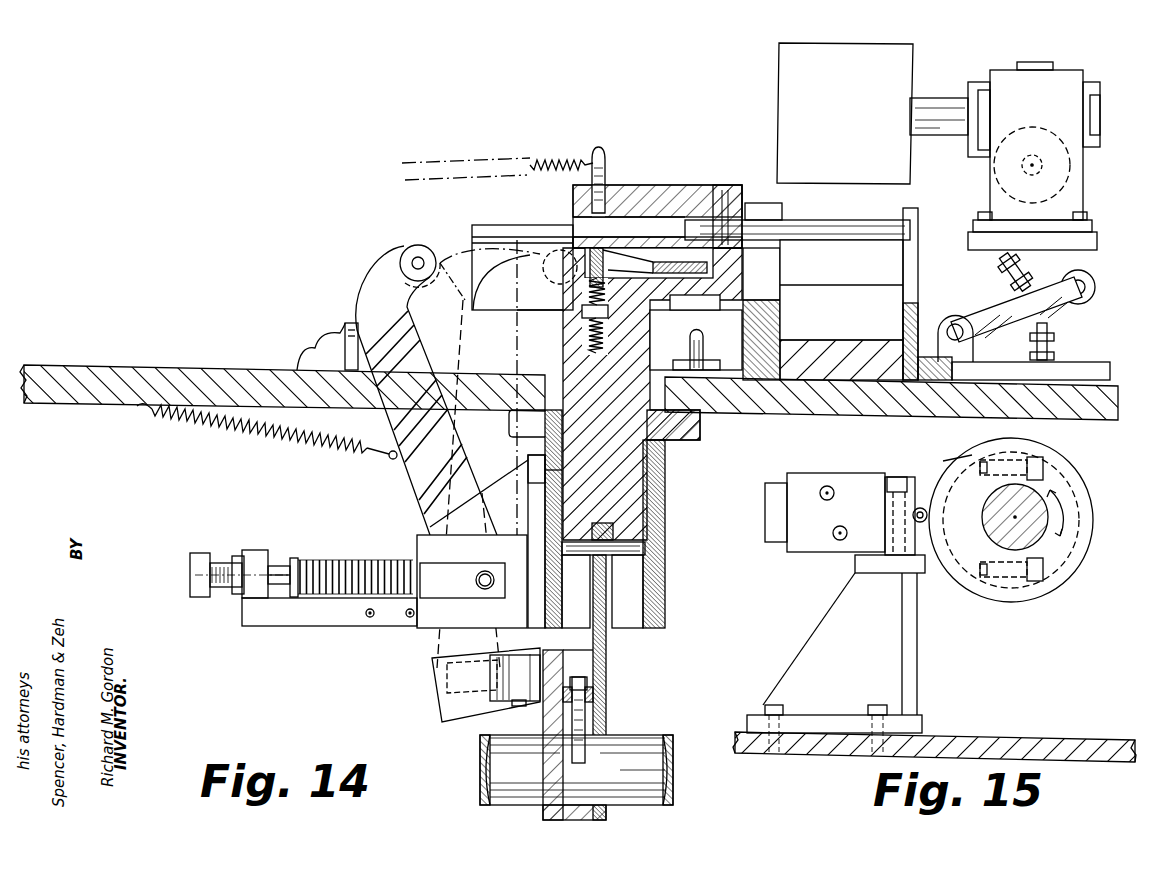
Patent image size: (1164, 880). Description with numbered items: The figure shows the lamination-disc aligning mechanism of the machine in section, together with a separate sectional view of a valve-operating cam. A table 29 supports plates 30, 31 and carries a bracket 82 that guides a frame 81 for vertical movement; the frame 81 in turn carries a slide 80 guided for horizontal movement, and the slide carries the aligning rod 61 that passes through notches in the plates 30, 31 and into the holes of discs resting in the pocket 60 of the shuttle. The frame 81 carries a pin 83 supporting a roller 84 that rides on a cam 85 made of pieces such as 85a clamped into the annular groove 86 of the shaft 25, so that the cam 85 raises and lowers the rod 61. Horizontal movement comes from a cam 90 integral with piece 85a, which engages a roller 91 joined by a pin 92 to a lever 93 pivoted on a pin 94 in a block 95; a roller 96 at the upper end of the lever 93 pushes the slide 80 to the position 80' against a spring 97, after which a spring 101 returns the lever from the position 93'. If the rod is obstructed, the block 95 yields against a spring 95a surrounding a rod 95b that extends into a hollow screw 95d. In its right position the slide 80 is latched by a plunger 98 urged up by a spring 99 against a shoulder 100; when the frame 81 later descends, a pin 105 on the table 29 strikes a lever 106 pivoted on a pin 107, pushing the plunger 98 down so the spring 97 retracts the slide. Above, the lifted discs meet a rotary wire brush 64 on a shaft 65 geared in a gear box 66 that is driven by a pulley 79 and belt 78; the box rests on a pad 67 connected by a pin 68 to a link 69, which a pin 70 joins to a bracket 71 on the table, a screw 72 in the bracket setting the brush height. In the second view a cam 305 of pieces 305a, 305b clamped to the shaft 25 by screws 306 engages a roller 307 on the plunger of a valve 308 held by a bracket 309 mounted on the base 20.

In FIG. 15, the base 20 is at (857, 745).
In FIG. 14, the shaft 25 is at (655, 769).
In FIG. 15, the shaft 25 is at (995, 503).
In FIG. 14, the table 29 is at (1095, 405).
In FIG. 14, the plate 30 is at (775, 215).
In FIG. 14, the plate 31 is at (920, 213).
In FIG. 14, the pocket 60 is at (875, 325).
In FIG. 14, the aligning rod 61 is at (870, 211).
In FIG. 14, the rotary wire brush 64 is at (898, 60).
In FIG. 14, the shaft 65 is at (950, 136).
In FIG. 14, the gear box 66 is at (1073, 95).
In FIG. 14, the pad 67 is at (1097, 243).
In FIG. 14, the pin 68 is at (1086, 287).
In FIG. 14, the link 69 is at (1068, 307).
In FIG. 14, the pin 70 is at (950, 326).
In FIG. 14, the bracket 71 is at (1100, 375).
In FIG. 14, the screw 72 is at (1058, 333).
In FIG. 14, the belt 78 is at (1003, 266).
In FIG. 14, the pulley 79 is at (1060, 193).
In FIG. 14, the slide 80 is at (607, 236).
In FIG. 14, the slide position 80' is at (540, 332).
In FIG. 14, the frame 81 is at (633, 484).
In FIG. 14, the bracket 82 is at (700, 436).
In FIG. 14, the pin 83 is at (633, 557).
In FIG. 14, the roller 84 is at (595, 565).
In FIG. 14, the cam 85 is at (617, 623).
In FIG. 14, the cam piece 85a is at (557, 720).
In FIG. 14, the annular groove 86 is at (593, 768).
In FIG. 14, the cam 90 is at (507, 717).
In FIG. 14, the roller 91 is at (440, 656).
In FIG. 14, the pin 92 is at (480, 702).
In FIG. 14, the lever 93 is at (426, 390).
In FIG. 14, the lever position 93' is at (453, 298).
In FIG. 14, the pin 94 is at (485, 590).
In FIG. 14, the block 95 is at (440, 578).
In FIG. 14, the spring 95a is at (316, 578).
In FIG. 14, the rod 95b is at (314, 602).
In FIG. 14, the hollow screw 95d is at (245, 534).
In FIG. 14, the roller 96 is at (418, 245).
In FIG. 14, the spring 97 is at (507, 160).
In FIG. 14, the plunger 98 is at (587, 240).
In FIG. 14, the spring 99 is at (508, 400).
In FIG. 14, the shoulder 100 is at (612, 208).
In FIG. 14, the spring 101 is at (273, 445).
In FIG. 14, the pin 105 is at (700, 343).
In FIG. 14, the lever 106 is at (710, 255).
In FIG. 14, the pin 107 is at (655, 311).
In FIG. 15, the cam 305 is at (977, 585).
In FIG. 15, the cam piece 305a is at (1020, 442).
In FIG. 15, the cam piece 305b is at (1083, 486).
In FIG. 15, the screws 306 is at (1043, 568).
In FIG. 15, the roller 307 is at (925, 505).
In FIG. 15, the valve 308 is at (797, 547).
In FIG. 15, the bracket 309 is at (792, 660).